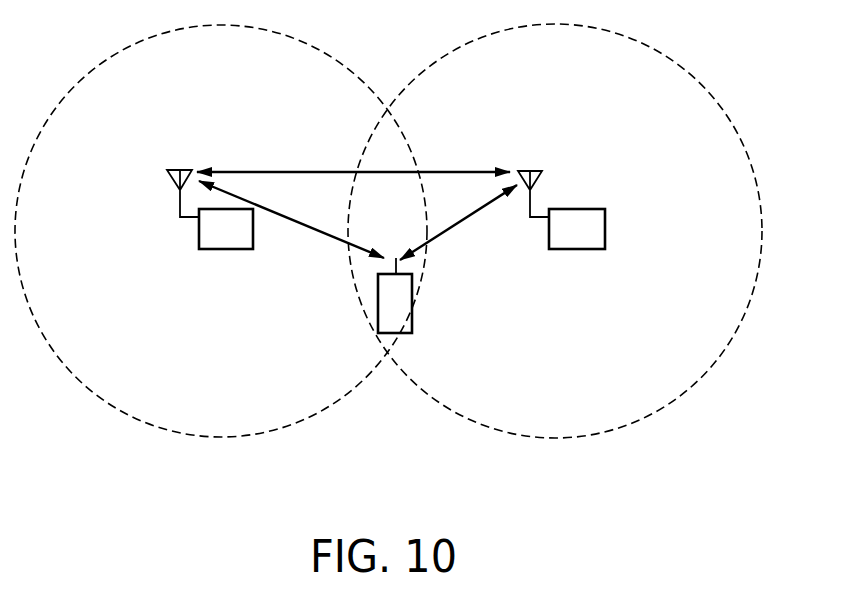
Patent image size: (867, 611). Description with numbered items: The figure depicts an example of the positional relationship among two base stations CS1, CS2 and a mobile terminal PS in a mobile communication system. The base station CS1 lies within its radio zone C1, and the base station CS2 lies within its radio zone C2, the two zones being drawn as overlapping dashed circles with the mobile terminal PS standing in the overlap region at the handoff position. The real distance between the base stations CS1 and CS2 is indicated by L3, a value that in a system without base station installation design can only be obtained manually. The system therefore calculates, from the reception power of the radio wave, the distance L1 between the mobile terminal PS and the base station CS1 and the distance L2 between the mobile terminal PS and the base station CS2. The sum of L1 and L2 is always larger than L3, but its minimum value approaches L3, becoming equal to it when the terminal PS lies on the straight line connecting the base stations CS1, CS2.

The radio zone of base station CS1 C1 is at (214, 436).
The radio zone of base station CS2 C2 is at (548, 436).
The base station CS1 is at (218, 249).
The base station CS2 is at (605, 228).
The mobile terminal PS is at (378, 315).
The distance between mobile terminal PS and base station CS1 L1 is at (310, 231).
The distance between mobile terminal PS and base station CS2 L2 is at (458, 229).
The real distance between base stations CS1 and CS2 L3 is at (289, 170).